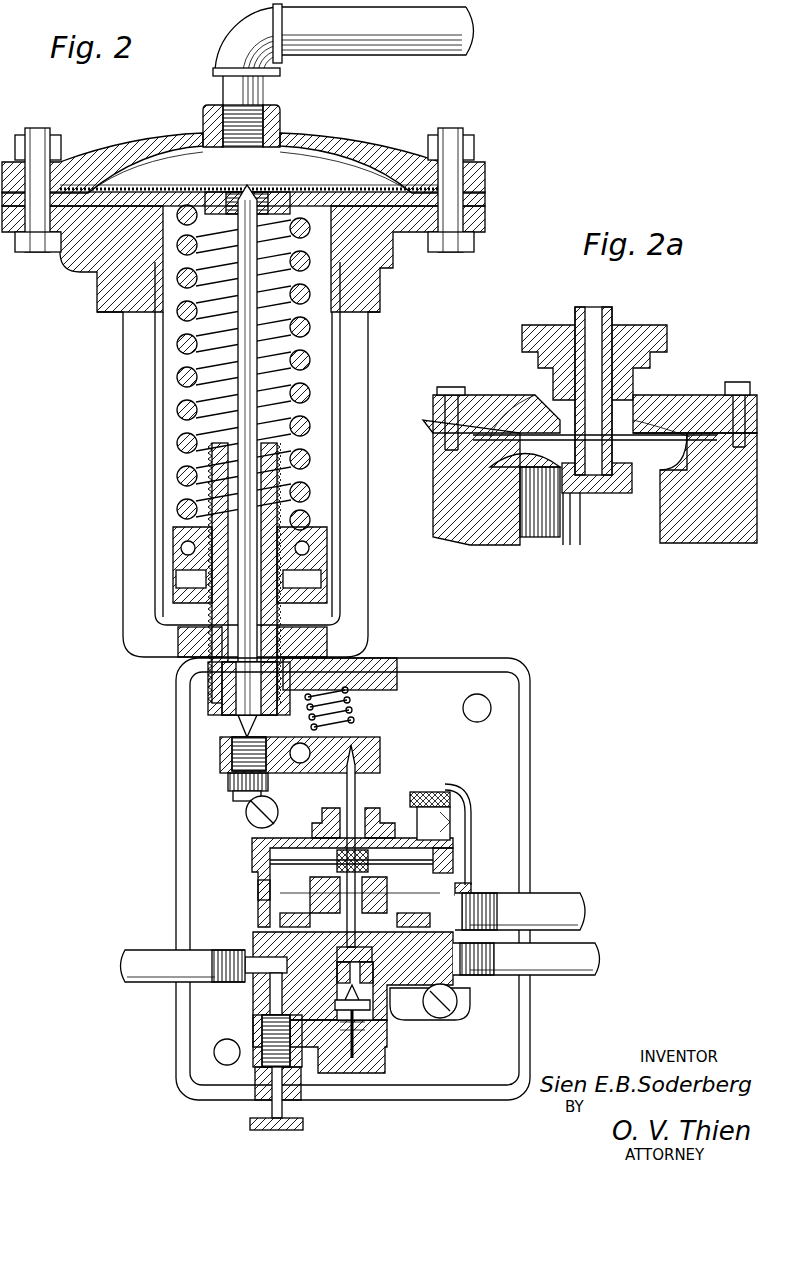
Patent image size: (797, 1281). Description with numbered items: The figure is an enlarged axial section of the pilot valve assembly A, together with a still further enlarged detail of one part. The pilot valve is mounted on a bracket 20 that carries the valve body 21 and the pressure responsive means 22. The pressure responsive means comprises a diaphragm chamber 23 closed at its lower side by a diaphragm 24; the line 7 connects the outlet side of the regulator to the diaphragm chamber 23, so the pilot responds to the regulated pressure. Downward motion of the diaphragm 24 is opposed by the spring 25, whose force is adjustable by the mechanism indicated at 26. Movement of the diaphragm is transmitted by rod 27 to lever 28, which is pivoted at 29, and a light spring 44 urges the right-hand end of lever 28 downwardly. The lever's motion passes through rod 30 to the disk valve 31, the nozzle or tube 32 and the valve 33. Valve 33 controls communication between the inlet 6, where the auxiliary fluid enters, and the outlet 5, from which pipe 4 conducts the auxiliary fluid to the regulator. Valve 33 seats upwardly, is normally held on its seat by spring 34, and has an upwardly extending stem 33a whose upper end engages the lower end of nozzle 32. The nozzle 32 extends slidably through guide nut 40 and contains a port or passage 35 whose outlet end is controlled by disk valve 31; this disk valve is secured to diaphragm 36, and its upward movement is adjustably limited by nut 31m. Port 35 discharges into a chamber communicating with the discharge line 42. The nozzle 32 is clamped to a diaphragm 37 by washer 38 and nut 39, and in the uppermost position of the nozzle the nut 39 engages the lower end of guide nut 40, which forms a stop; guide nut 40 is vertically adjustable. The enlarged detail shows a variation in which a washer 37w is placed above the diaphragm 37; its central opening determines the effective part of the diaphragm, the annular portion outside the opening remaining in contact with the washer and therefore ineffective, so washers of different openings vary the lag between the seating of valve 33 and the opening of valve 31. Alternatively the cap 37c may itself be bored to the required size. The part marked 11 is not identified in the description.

In FIG. 2, the line 7 is at (466, 22).
In FIG. 2, the diaphragm chamber 23 is at (175, 165).
In FIG. 2, the diaphragm 24 is at (240, 186).
In FIG. 2, the pressure responsive means 22 is at (130, 316).
In FIG. 2, the pilot valve assembly A is at (120, 385).
In FIG. 2, the rod 27 is at (340, 386).
In FIG. 2, the spring 25 is at (243, 423).
In FIG. 2, the adjusting mechanism 26 is at (175, 538).
In FIG. 2, the light spring 44 is at (352, 702).
In FIG. 2, the lever 28 is at (218, 750).
In FIG. 2, the pivot 29 is at (305, 752).
In FIG. 2, the bracket 20 is at (200, 806).
In FIG. 2, the rod 30 is at (356, 790).
In FIG. 2, the nut 31m is at (440, 800).
In FIG. 2, the disk valve 31 is at (472, 835).
In FIG. 2, the diaphragm 36 is at (430, 855).
In FIG. 2, the port or passage 35 is at (470, 870).
In FIG. 2, the guide nut 40 is at (445, 885).
In FIG. 2, the nut 39 is at (415, 900).
In FIG. 2, the washer 38 is at (475, 910).
In FIG. 2, the discharge line 42 is at (585, 912).
In FIG. 2, the pipe 4 is at (600, 954).
In FIG. 2, the outlet 5 is at (472, 992).
In FIG. 2, the valve body 21 is at (470, 1022).
In FIG. 2, the nozzle or tube 32 is at (300, 878).
In FIG. 2, the cap 37c is at (290, 893).
In FIG. 2A, the cap 37c is at (505, 410).
In FIG. 2, the wall 11 is at (258, 888).
In FIG. 2, the diaphragm 37 is at (300, 925).
In FIG. 2A, the diaphragm 37 is at (665, 425).
In FIG. 2, the inlet 6 is at (240, 985).
In FIG. 2, the stem 33a is at (270, 1015).
In FIG. 2, the valve 33 is at (385, 1000).
In FIG. 2, the spring 34 is at (375, 1005).
In FIG. 2A, the washer 37w is at (685, 437).